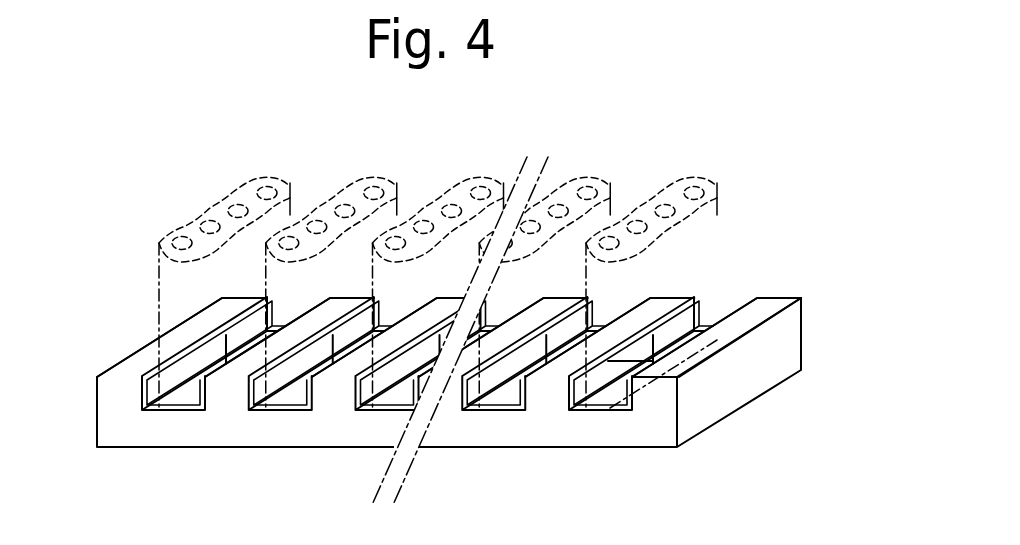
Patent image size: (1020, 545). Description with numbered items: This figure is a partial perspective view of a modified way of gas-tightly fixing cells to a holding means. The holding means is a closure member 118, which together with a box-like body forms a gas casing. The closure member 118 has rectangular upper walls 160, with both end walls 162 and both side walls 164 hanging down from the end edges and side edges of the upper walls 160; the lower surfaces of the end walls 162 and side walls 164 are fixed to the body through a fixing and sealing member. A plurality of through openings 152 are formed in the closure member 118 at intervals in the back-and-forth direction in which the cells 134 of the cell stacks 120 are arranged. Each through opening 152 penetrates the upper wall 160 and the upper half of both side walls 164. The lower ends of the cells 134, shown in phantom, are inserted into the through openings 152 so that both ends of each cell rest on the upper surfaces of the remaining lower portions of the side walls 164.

The closure member 118 is at (456, 363).
The cell stack 120 is at (385, 257).
The cell 134 is at (158, 290).
The through opening 152 is at (566, 408).
The upper wall 160 is at (674, 303).
The end wall 162 is at (97, 410).
The side wall 164 is at (270, 435).